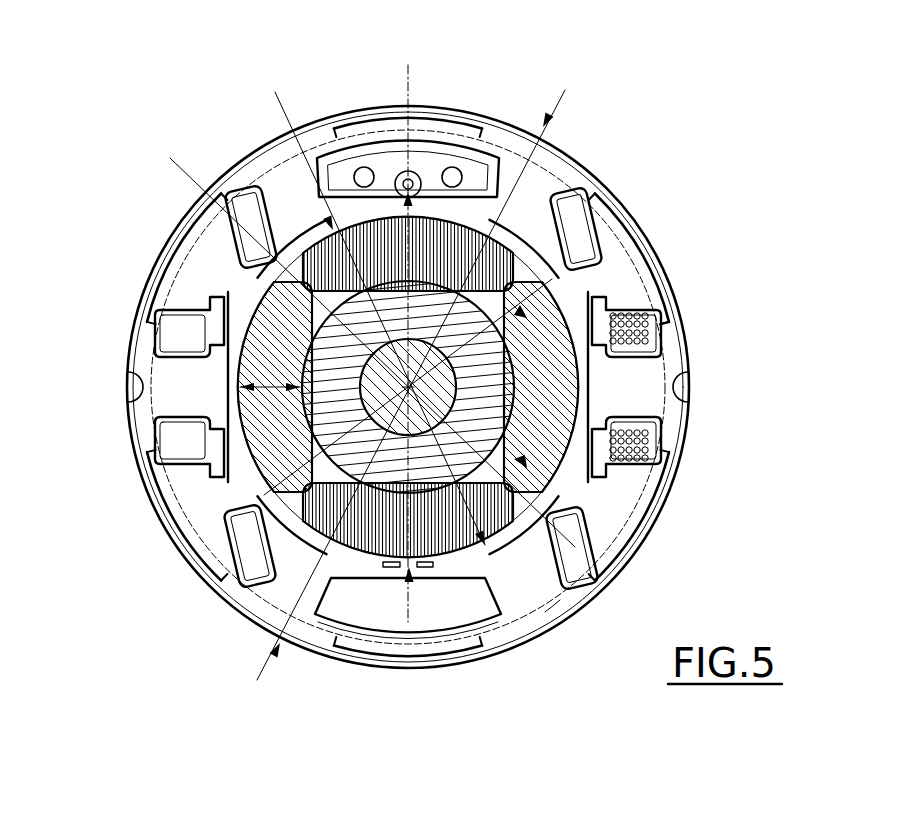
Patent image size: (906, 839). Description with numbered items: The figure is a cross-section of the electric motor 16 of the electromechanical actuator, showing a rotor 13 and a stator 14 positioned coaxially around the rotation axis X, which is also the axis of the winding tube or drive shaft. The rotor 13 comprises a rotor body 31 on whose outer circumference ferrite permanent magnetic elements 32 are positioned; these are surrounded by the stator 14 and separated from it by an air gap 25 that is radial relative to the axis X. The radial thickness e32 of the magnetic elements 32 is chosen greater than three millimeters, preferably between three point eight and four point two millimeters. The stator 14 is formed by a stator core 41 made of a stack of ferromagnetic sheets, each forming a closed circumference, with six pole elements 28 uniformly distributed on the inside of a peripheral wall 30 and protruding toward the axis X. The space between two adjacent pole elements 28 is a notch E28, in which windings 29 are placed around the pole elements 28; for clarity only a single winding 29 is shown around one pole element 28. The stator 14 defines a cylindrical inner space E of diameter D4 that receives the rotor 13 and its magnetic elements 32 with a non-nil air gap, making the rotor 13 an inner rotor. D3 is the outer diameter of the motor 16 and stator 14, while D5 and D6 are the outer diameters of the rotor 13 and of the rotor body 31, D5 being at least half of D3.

The electric motor 16 is at (626, 142).
The stator 14 is at (443, 676).
The pole elements 28 is at (628, 398).
The air gap 25 is at (598, 190).
The winding 29 is at (646, 299).
The peripheral wall 30 is at (650, 494).
The notch E28 is at (380, 140).
The rotation axis X is at (690, 373).
The cylindrical inner space E is at (622, 538).
The stator core 41 is at (551, 607).
The rotor 13 is at (434, 340).
The rotor body 31 is at (434, 220).
The magnetic elements 32 is at (258, 512).
The outer diameter of the electric motor D3 is at (425, 385).
The inner diameter of the stator D4 is at (380, 315).
The outer diameter of the rotor D5 is at (423, 343).
The outer diameter of the rotor body D6 is at (372, 344).
The radial thickness of the magnetic elements e32 is at (270, 374).